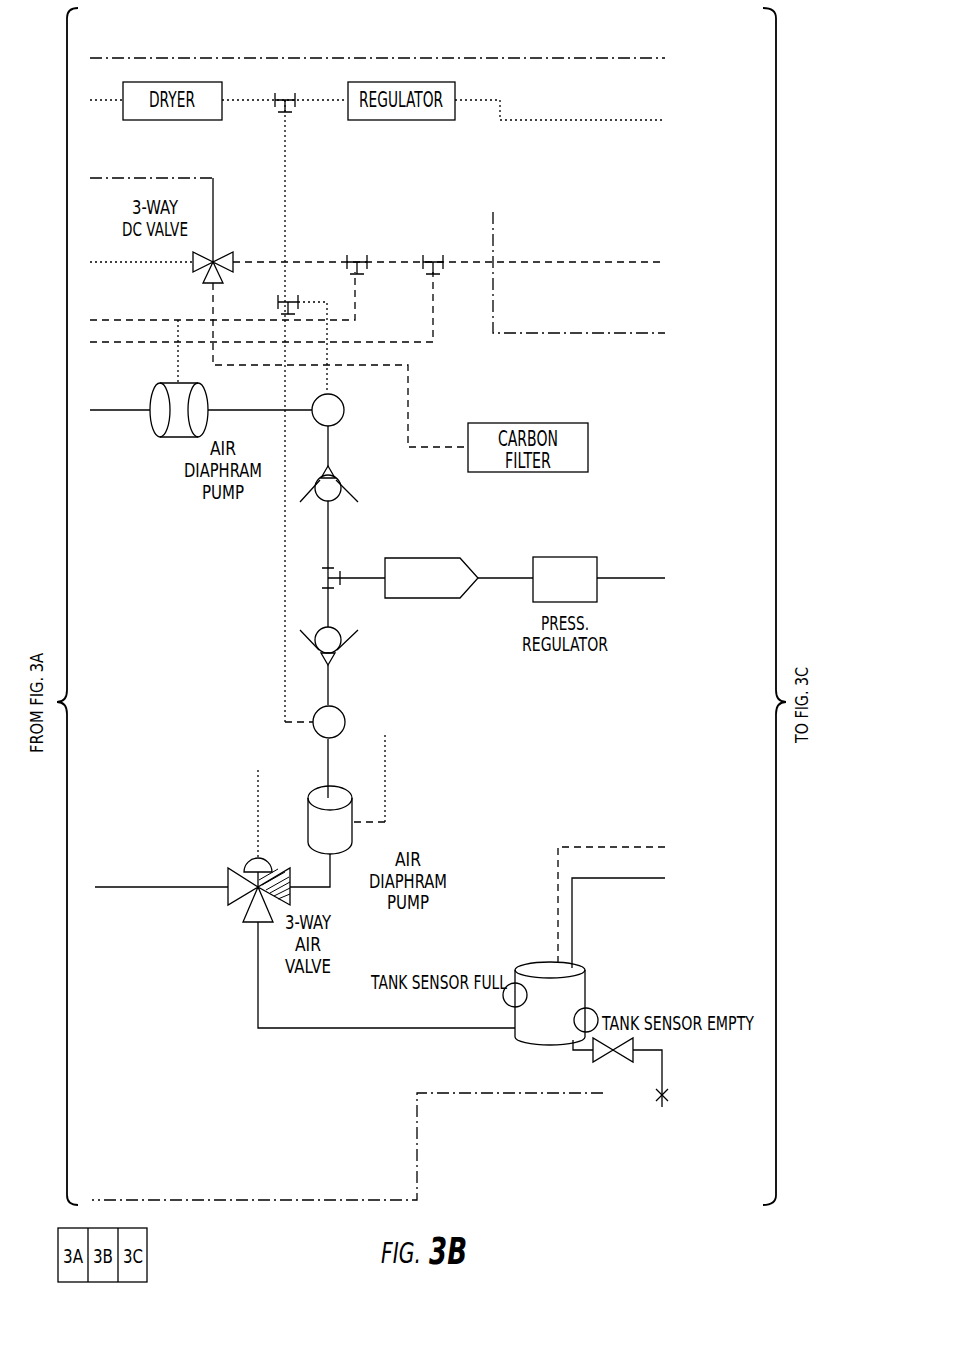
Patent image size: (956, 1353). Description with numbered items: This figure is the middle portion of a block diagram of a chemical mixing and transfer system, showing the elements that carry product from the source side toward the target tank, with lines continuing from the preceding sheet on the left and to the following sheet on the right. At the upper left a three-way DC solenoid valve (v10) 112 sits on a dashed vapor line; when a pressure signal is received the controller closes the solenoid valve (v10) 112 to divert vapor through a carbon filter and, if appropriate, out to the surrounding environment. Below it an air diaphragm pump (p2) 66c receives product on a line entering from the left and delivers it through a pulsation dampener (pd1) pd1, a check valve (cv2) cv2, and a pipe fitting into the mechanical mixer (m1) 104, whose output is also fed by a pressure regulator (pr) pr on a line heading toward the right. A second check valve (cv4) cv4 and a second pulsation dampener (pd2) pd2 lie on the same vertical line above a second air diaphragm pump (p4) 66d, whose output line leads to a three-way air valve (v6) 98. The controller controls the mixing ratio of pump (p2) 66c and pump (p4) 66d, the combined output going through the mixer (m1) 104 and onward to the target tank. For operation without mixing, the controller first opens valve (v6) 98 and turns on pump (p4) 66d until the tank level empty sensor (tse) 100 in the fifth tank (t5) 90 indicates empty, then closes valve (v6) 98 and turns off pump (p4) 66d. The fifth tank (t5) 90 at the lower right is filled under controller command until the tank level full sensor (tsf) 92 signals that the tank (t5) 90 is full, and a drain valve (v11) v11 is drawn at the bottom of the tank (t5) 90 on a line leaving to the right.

The solenoid valve 112 is at (262, 251).
The pump 66c is at (214, 416).
The mechanical mixer 104 is at (465, 561).
The valve 98 is at (252, 835).
The pump 66d is at (393, 819).
The tank level sensor 92 is at (499, 945).
The fifth tank 90 is at (586, 986).
The level sensor 100 is at (595, 1068).
The solenoid valve v10 is at (219, 281).
The pump p2 is at (179, 421).
The pulsation dampener pd1 is at (344, 410).
The check valve cv2 is at (341, 484).
The mechanical mixer m1 is at (431, 590).
The pressure regulator pr is at (565, 579).
The check valve cv4 is at (341, 646).
The pulsation dampener pd2 is at (349, 718).
The pump p4 is at (345, 823).
The valve v6 is at (252, 895).
The fifth tank t5 is at (550, 1003).
The tank level sensor tsf is at (499, 975).
The level sensor tse is at (600, 1011).
The valve v11 is at (613, 1061).